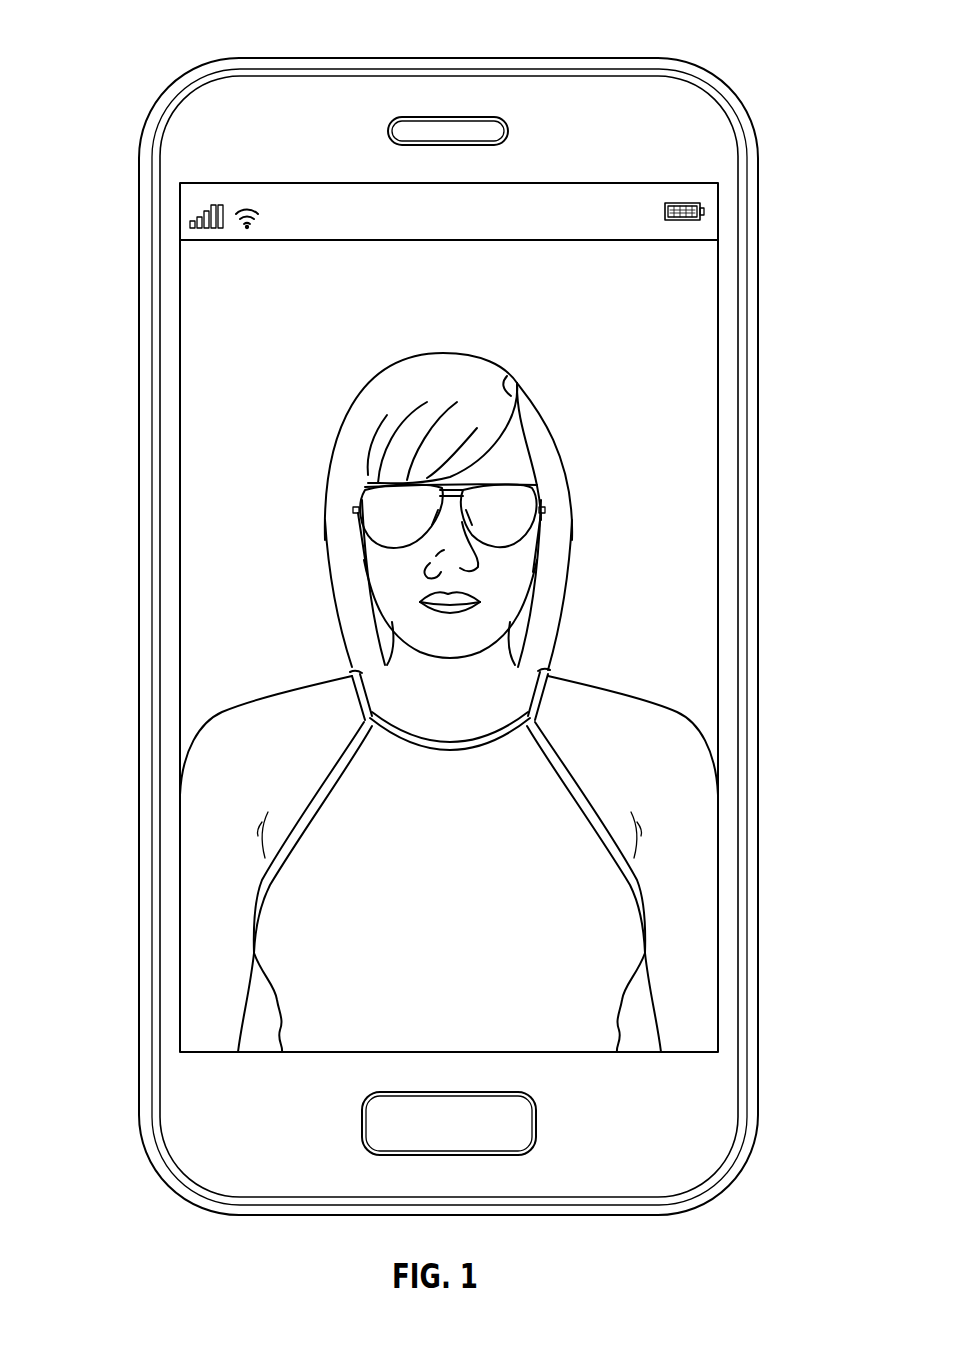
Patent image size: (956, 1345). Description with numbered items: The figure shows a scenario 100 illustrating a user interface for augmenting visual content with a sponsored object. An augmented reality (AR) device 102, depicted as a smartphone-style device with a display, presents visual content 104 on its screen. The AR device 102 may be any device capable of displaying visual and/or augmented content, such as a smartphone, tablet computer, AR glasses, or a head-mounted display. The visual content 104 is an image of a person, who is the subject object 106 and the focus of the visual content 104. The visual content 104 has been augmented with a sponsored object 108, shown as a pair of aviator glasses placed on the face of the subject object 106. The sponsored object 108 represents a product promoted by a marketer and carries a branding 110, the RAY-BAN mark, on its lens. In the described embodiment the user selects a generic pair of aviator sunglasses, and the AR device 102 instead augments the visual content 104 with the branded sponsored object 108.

The scenario 100 is at (472, 23).
The augmented reality (AR) device 102 is at (692, 110).
The visual content 104 is at (703, 298).
The subject object 106 is at (683, 748).
The sponsored object 108 is at (427, 490).
The branding 110 is at (370, 507).